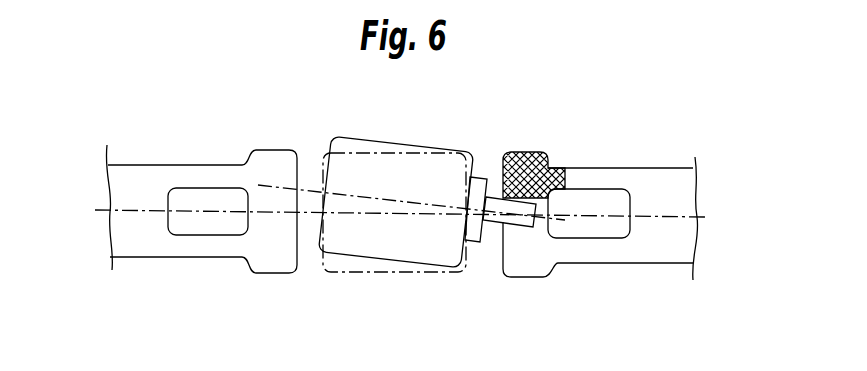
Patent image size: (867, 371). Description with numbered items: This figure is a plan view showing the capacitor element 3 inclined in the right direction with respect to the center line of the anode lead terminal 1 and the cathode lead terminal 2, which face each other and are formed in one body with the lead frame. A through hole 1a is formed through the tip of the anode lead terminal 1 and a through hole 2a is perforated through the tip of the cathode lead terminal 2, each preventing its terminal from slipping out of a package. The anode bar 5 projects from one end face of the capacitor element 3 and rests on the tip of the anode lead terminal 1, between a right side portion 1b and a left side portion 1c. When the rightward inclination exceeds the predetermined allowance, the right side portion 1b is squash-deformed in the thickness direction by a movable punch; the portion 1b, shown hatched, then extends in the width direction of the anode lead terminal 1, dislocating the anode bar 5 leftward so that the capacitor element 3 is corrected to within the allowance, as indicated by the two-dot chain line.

The anode lead terminal 1 is at (663, 200).
The through hole 1a is at (598, 205).
The right side portion of the anode lead terminal tip 1b is at (532, 153).
The left side portion of the anode lead terminal tip 1c is at (532, 265).
The cathode lead terminal 2 is at (133, 178).
The through hole 2a is at (203, 195).
The capacitor element 3 is at (361, 137).
The anode bar 5 is at (490, 232).